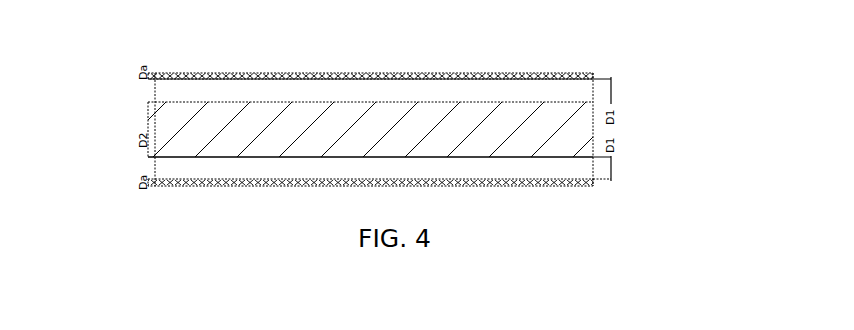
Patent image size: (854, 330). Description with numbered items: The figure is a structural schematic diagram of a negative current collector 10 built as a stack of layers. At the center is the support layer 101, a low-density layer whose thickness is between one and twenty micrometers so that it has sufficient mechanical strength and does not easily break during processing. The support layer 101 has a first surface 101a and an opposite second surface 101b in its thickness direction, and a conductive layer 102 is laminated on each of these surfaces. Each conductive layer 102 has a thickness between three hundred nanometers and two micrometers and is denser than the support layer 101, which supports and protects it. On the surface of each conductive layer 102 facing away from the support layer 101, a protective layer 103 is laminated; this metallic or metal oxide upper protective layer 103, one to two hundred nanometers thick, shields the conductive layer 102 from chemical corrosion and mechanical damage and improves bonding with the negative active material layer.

The negative current collector 10 is at (385, 27).
The support layer 101 is at (160, 132).
The first surface 101a is at (240, 102).
The second surface 101b is at (245, 157).
The conductive layer 102 is at (612, 95).
The protective layer 103 is at (612, 77).